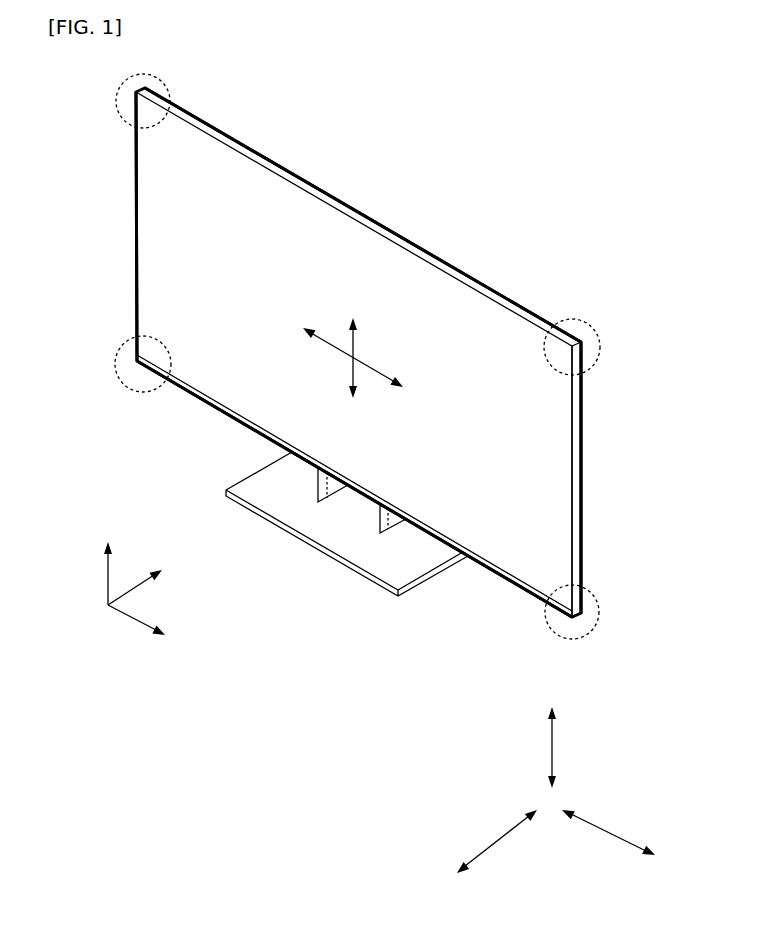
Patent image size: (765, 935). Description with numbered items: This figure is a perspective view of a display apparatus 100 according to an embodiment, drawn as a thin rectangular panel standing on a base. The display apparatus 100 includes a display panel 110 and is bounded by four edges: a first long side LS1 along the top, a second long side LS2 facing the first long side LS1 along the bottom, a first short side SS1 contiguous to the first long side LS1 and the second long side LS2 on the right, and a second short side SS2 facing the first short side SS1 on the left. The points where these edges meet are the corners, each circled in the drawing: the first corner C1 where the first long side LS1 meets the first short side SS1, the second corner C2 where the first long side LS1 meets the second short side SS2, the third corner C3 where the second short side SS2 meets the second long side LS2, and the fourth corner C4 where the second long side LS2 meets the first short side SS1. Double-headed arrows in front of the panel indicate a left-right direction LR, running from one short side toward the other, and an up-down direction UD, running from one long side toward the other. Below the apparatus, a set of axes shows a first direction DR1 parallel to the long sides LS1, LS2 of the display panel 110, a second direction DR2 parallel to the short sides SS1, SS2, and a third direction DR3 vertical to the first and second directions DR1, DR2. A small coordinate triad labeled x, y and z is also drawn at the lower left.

The display apparatus 100 is at (398, 228).
The display panel 110 is at (158, 283).
The first corner C1 is at (586, 347).
The second corner C2 is at (131, 101).
The third corner C3 is at (132, 364).
The fourth corner C4 is at (586, 612).
The first short side SS1 is at (565, 484).
The second short side SS2 is at (135, 228).
The first long side LS1 is at (465, 277).
The second long side LS2 is at (225, 416).
The up-down direction UD is at (356, 344).
The left-right direction LR is at (367, 364).
The first direction DR1 is at (630, 843).
The second direction DR2 is at (551, 734).
The third direction DR3 is at (483, 857).
The x axis x is at (143, 626).
The y axis y is at (109, 559).
The z axis z is at (142, 581).